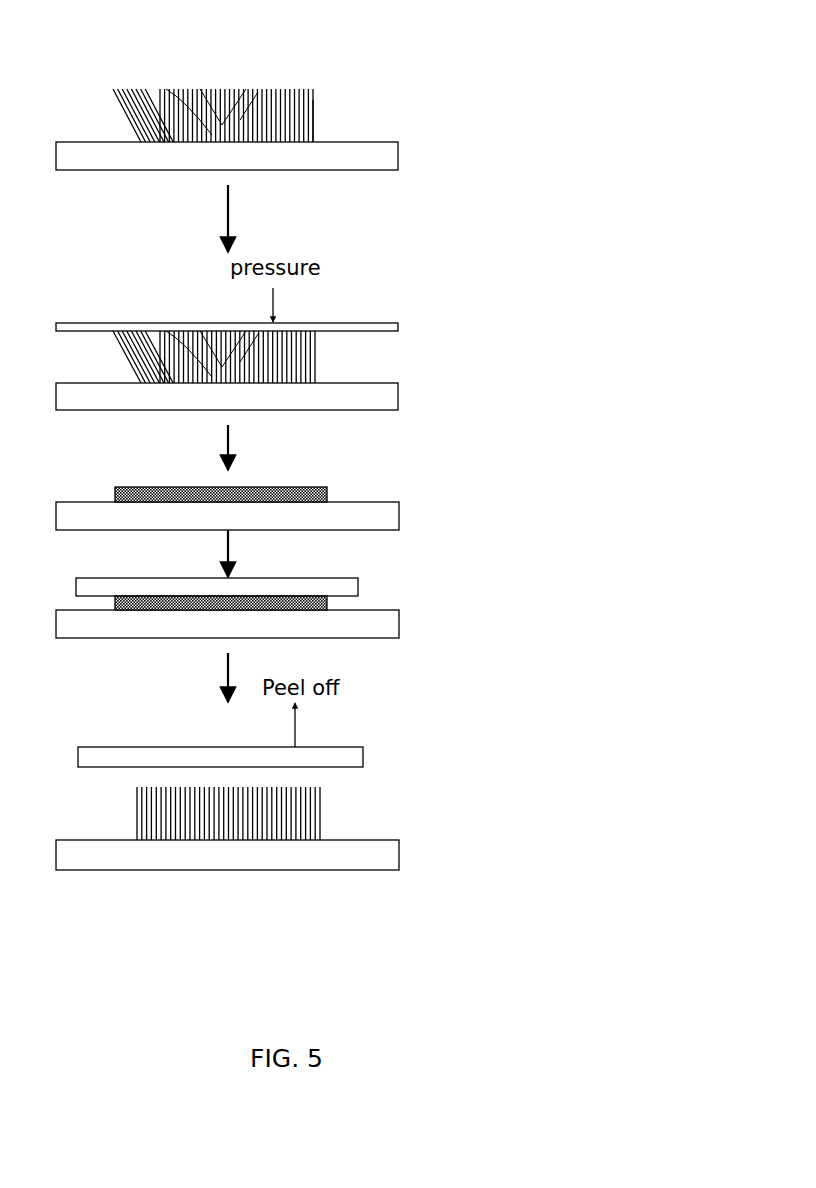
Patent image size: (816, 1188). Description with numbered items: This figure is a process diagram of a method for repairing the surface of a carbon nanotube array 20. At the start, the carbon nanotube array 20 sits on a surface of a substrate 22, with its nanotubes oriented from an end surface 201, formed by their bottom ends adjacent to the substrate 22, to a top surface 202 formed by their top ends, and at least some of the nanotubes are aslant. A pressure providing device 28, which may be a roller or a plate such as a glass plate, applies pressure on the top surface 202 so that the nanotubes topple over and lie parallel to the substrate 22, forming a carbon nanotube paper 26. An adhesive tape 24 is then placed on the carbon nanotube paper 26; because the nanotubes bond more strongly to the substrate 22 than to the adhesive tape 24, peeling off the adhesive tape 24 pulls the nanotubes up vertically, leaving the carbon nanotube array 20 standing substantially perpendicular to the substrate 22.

The carbon nanotube array 20 is at (318, 102).
The end surface 201 is at (320, 138).
The top surface 202 is at (228, 85).
The substrate 22 is at (368, 170).
The adhesive tape 24 is at (317, 577).
The carbon nanotube paper 26 is at (305, 486).
The pressure providing device 28 is at (372, 323).